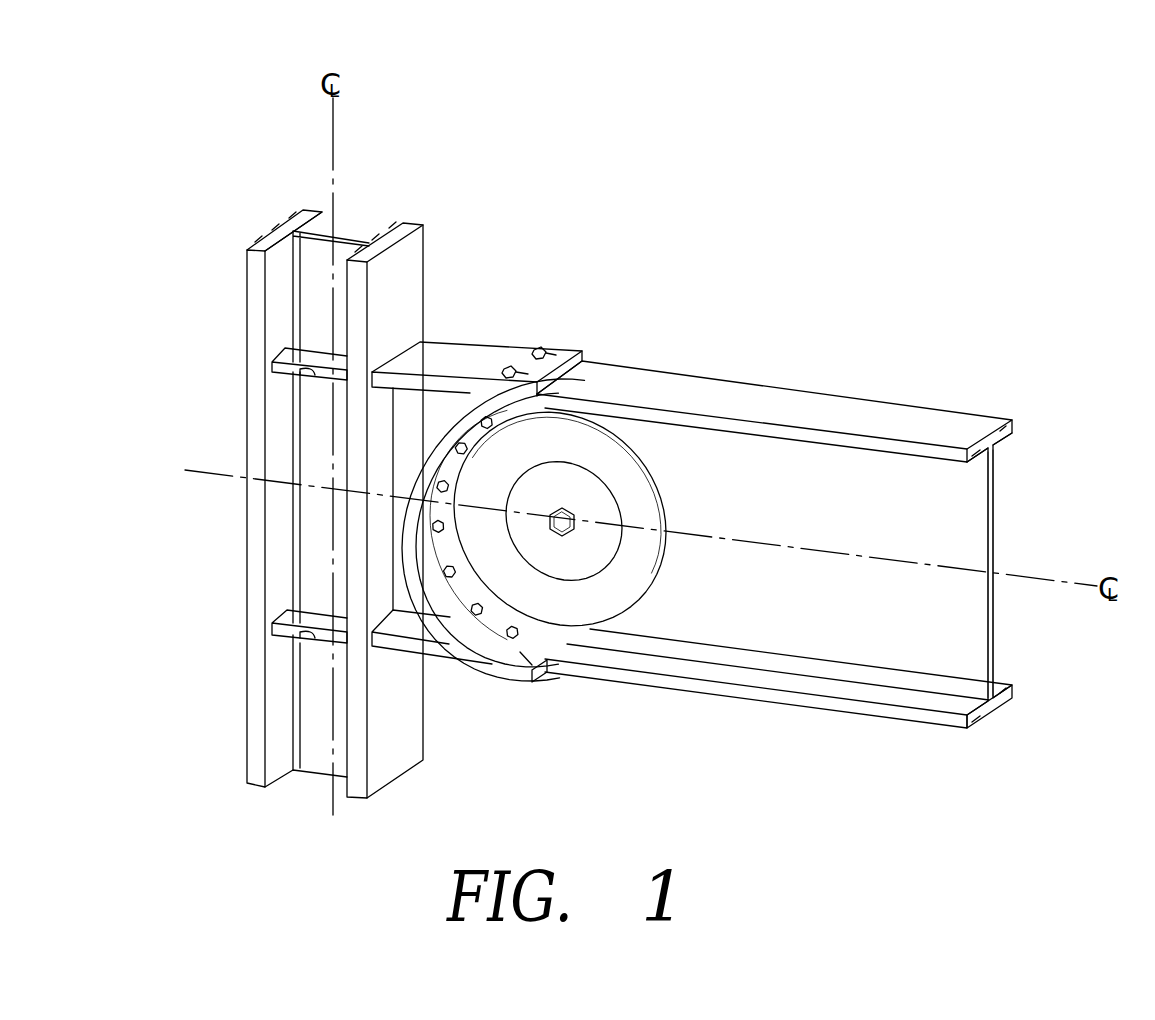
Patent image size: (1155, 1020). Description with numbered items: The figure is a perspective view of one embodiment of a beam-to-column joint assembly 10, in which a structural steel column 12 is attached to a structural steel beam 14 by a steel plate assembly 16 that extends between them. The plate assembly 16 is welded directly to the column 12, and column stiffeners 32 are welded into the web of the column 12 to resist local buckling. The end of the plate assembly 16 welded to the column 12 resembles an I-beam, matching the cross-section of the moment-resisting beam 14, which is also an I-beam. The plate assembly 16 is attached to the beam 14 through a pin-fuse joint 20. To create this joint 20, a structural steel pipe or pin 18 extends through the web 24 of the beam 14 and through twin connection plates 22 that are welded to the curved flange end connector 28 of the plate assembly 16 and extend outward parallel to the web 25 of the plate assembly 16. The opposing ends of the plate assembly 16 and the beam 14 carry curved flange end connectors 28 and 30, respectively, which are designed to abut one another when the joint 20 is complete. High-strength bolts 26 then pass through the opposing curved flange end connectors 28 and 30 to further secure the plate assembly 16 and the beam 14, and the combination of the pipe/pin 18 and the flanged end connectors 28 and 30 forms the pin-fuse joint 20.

The beam-to-column joint assembly 10 is at (457, 463).
The structural steel column 12 is at (240, 496).
The structural steel beam 14 is at (820, 526).
The steel plate assembly 16 is at (478, 360).
The structural steel pipe or pin 18 is at (596, 468).
The pin-fuse joint 20 is at (551, 469).
The twin connection plates 22 is at (632, 620).
The web of the beam 24 is at (930, 518).
The web of the plate assembly 25 is at (428, 427).
The high-strength bolts 26 is at (485, 592).
The curved flange end connector of the plate assembly 28 is at (510, 668).
The curved flange end connector of the beam 30 is at (518, 658).
The column stiffeners 32 is at (298, 374).